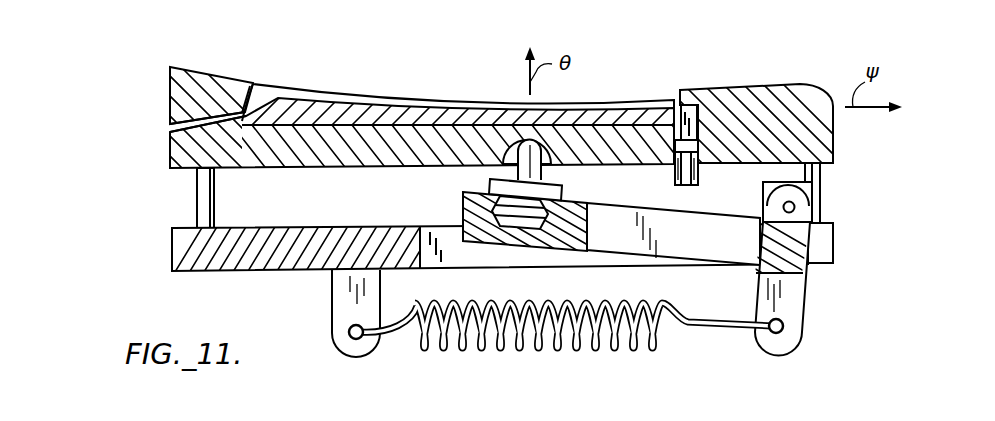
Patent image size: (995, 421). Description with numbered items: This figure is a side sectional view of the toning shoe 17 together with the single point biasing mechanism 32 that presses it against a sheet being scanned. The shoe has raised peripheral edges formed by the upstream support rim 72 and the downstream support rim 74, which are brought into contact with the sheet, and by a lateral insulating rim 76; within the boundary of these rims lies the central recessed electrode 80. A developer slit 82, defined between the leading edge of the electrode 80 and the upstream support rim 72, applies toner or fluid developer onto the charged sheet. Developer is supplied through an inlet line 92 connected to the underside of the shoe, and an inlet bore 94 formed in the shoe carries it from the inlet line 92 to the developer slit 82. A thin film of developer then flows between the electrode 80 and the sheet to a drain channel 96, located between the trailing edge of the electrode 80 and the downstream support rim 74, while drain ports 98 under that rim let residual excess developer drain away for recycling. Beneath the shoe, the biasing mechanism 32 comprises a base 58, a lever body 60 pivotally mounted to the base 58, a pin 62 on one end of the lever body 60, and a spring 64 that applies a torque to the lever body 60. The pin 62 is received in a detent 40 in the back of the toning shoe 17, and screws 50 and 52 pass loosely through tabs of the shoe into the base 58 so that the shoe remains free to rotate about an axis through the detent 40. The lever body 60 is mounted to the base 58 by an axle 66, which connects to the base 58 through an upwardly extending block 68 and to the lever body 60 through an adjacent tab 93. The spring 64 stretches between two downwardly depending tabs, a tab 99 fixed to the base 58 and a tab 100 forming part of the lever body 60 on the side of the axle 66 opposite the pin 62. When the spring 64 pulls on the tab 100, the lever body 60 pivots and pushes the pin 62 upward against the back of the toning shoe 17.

The toning shoe 17 is at (144, 97).
The single point biasing mechanism 32 is at (146, 248).
The detent 40 is at (540, 168).
The screw 50 is at (197, 186).
The screw 52 is at (822, 170).
The base 58 is at (243, 272).
The lever body 60 is at (470, 206).
The pin 62 is at (524, 174).
The spring 64 is at (666, 312).
The axle 66 is at (796, 206).
The block 68 is at (778, 183).
The upstream support rim 72 is at (757, 87).
The downstream support rim 74 is at (212, 80).
The lateral insulating rim 76 is at (357, 100).
The central recessed electrode 80 is at (410, 106).
The developer slit 82 is at (669, 96).
The inlet line 92 is at (676, 177).
The tab 93 is at (772, 204).
The inlet bore 94 is at (677, 143).
The drain channel 96 is at (259, 98).
The drain port 98 is at (170, 128).
The tab 99 is at (338, 296).
The tab 100 is at (803, 288).